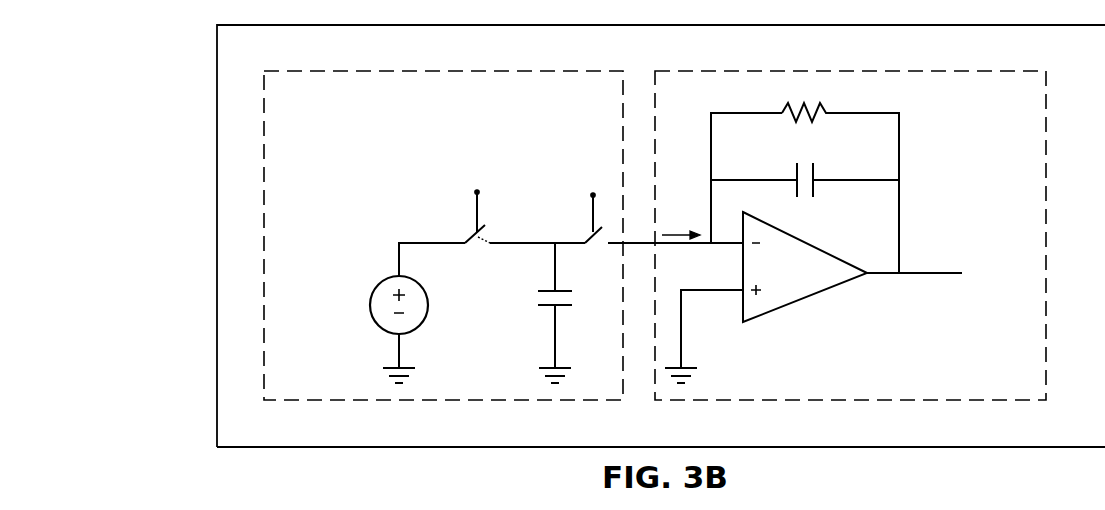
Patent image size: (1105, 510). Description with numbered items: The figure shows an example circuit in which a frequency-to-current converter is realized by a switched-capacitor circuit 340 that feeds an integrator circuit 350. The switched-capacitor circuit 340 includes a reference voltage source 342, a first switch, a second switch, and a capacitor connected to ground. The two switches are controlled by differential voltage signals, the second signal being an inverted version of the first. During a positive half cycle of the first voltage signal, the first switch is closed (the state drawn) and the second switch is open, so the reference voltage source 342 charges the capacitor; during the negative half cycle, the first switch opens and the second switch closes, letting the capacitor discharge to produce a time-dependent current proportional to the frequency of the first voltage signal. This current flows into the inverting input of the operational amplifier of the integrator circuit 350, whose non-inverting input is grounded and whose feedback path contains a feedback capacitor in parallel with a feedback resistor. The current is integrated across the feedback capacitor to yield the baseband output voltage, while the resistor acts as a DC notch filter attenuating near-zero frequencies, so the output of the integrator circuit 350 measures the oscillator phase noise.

The switched-capacitor circuit 340 is at (325, 107).
The reference voltage source 342 is at (427, 312).
The integrator circuit 350 is at (1017, 107).